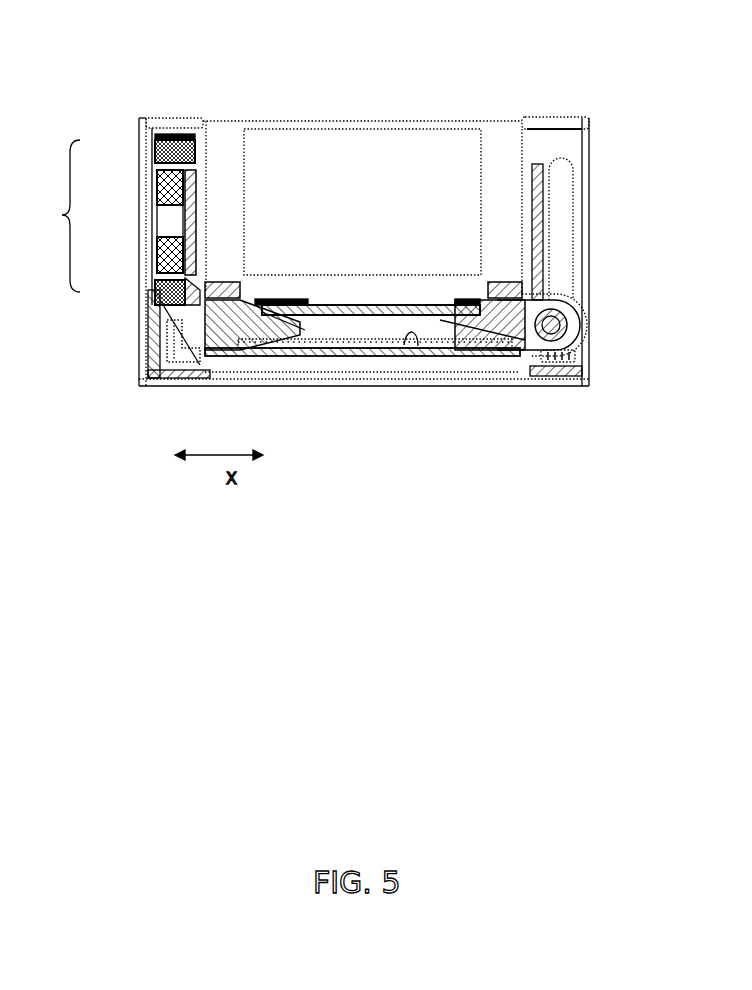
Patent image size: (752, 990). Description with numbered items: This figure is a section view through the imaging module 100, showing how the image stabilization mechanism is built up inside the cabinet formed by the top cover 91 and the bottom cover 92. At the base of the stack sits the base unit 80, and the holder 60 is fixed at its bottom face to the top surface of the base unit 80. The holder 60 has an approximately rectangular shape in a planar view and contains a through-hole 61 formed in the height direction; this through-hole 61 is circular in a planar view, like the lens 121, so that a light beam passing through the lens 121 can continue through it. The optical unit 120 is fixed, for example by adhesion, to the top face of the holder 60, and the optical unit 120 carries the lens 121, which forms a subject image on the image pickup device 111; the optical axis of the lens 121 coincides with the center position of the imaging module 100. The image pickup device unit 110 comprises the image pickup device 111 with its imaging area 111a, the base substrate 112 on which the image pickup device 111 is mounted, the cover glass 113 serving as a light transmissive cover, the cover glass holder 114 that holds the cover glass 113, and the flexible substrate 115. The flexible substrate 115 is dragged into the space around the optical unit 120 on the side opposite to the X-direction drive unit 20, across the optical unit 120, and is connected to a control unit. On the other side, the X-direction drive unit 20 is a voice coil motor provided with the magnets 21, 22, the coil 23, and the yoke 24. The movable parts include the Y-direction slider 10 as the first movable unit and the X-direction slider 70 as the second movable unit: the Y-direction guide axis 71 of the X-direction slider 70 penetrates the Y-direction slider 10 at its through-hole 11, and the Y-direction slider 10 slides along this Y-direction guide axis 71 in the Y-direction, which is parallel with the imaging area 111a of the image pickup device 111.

The imaging module 100 is at (116, 77).
The Y-direction slider 10 is at (388, 252).
The through-hole 11 is at (567, 323).
The X-direction drive unit 20 is at (61, 216).
The magnet 21 is at (140, 155).
The magnet 22 is at (142, 279).
The coil 23 is at (134, 223).
The yoke 24 is at (140, 222).
The holder 60 is at (563, 279).
The through-hole 61 is at (482, 361).
The X-direction slider 70 is at (140, 339).
The Y-direction guide axis 71 is at (583, 358).
The base unit 80 is at (147, 334).
The top cover 91 is at (178, 190).
The bottom cover 92 is at (113, 249).
The image pickup device unit 110 is at (362, 412).
The image pickup device 111 is at (362, 385).
The imaging area 111a is at (413, 379).
The base substrate 112 is at (375, 380).
The cover glass 113 is at (367, 363).
The cover glass holder 114 is at (250, 352).
The flexible substrate 115 is at (590, 229).
The optical unit 120 is at (536, 95).
The lens 121 is at (362, 176).